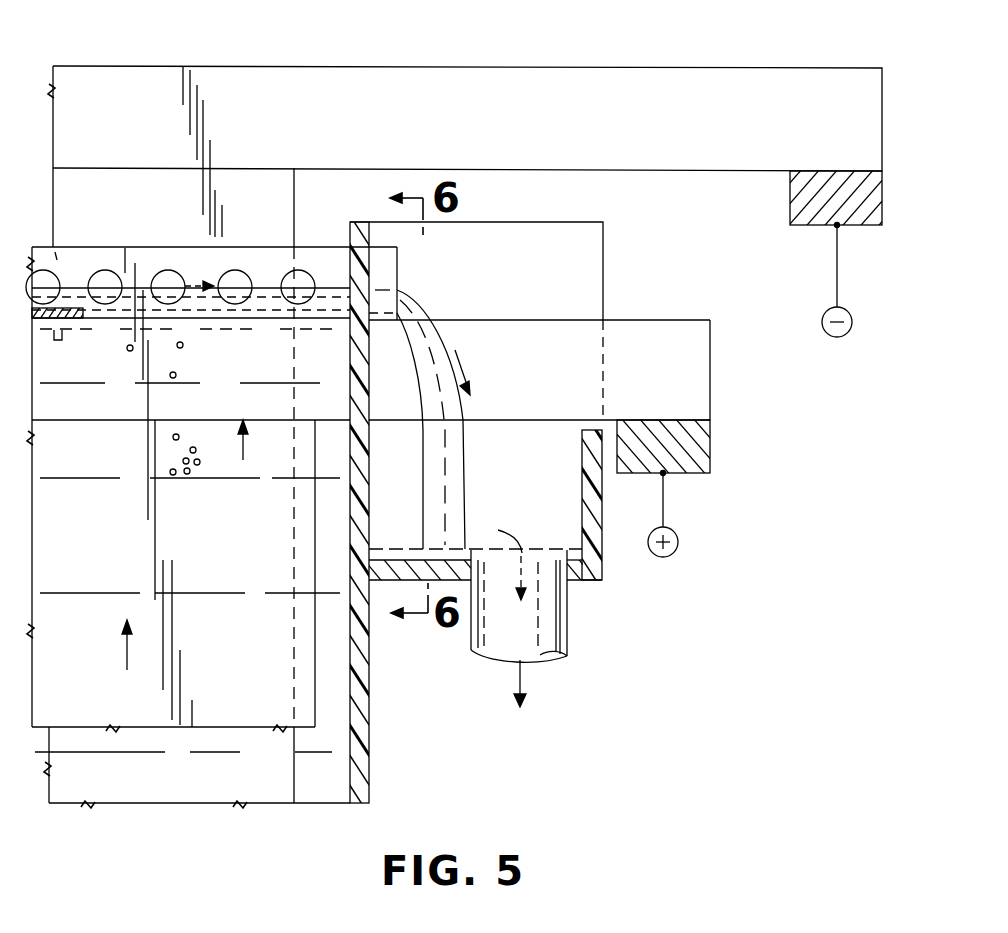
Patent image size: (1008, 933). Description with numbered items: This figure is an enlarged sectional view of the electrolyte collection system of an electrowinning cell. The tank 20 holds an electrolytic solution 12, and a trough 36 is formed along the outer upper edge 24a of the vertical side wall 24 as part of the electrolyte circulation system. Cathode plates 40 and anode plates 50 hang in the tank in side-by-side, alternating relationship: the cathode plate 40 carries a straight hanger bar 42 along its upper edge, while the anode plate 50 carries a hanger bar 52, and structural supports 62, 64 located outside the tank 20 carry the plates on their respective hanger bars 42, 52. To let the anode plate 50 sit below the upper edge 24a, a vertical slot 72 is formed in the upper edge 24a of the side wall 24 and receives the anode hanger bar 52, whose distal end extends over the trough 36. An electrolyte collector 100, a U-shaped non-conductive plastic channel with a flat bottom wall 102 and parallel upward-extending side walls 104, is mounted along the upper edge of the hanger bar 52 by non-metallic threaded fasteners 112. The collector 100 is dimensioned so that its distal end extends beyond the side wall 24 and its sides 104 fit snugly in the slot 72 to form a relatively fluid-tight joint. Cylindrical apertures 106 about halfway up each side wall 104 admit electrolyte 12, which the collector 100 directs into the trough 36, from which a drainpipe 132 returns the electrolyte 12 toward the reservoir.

The electrolytic solution 12 is at (327, 290).
The tank 20 is at (376, 768).
The side wall 24 is at (372, 722).
The upper edge of side wall 24a is at (358, 222).
The trough 36 is at (542, 432).
The cathode plate 40 is at (233, 183).
The hanger bar 42 is at (590, 88).
The anode plate 50 is at (318, 667).
The hanger bar 52 is at (642, 338).
The structural support 62 is at (810, 193).
The structural support 64 is at (705, 450).
The slot 72 is at (370, 408).
The electrolyte collector 100 is at (141, 235).
The bottom wall 102 is at (68, 318).
The side wall 104 is at (56, 252).
The aperture 106 is at (228, 275).
The threaded fastener 112 is at (70, 290).
The drainpipe 132 is at (572, 615).